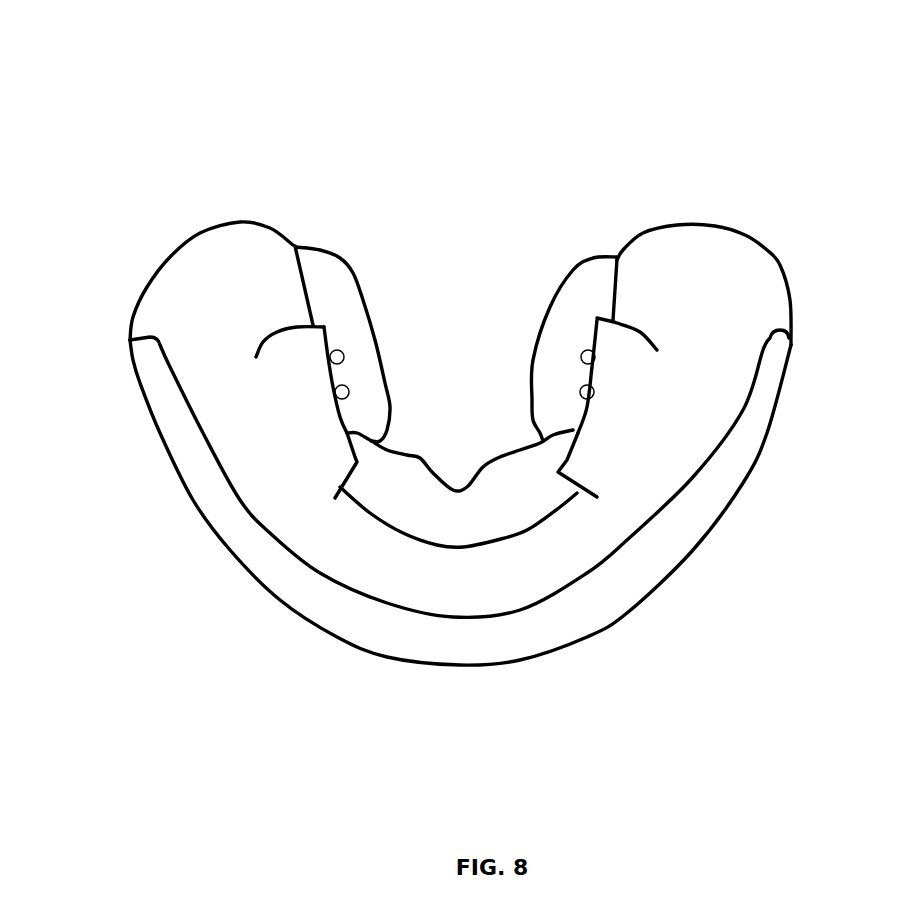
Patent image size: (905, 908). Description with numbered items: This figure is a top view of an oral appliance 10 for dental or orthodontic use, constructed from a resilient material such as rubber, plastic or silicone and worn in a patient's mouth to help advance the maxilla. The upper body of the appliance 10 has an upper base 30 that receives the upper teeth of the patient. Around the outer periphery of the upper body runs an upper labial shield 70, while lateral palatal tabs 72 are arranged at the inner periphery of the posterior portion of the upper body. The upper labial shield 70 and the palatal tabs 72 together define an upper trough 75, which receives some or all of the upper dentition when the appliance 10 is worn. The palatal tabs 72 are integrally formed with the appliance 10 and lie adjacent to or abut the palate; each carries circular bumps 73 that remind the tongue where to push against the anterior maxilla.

The appliance 10 is at (745, 114).
The upper base 30 is at (195, 232).
The upper labial shield 70 is at (282, 597).
The lateral palatal tabs 72 is at (456, 276).
The circular bumps 73 is at (348, 391).
The upper trough 75 is at (197, 333).